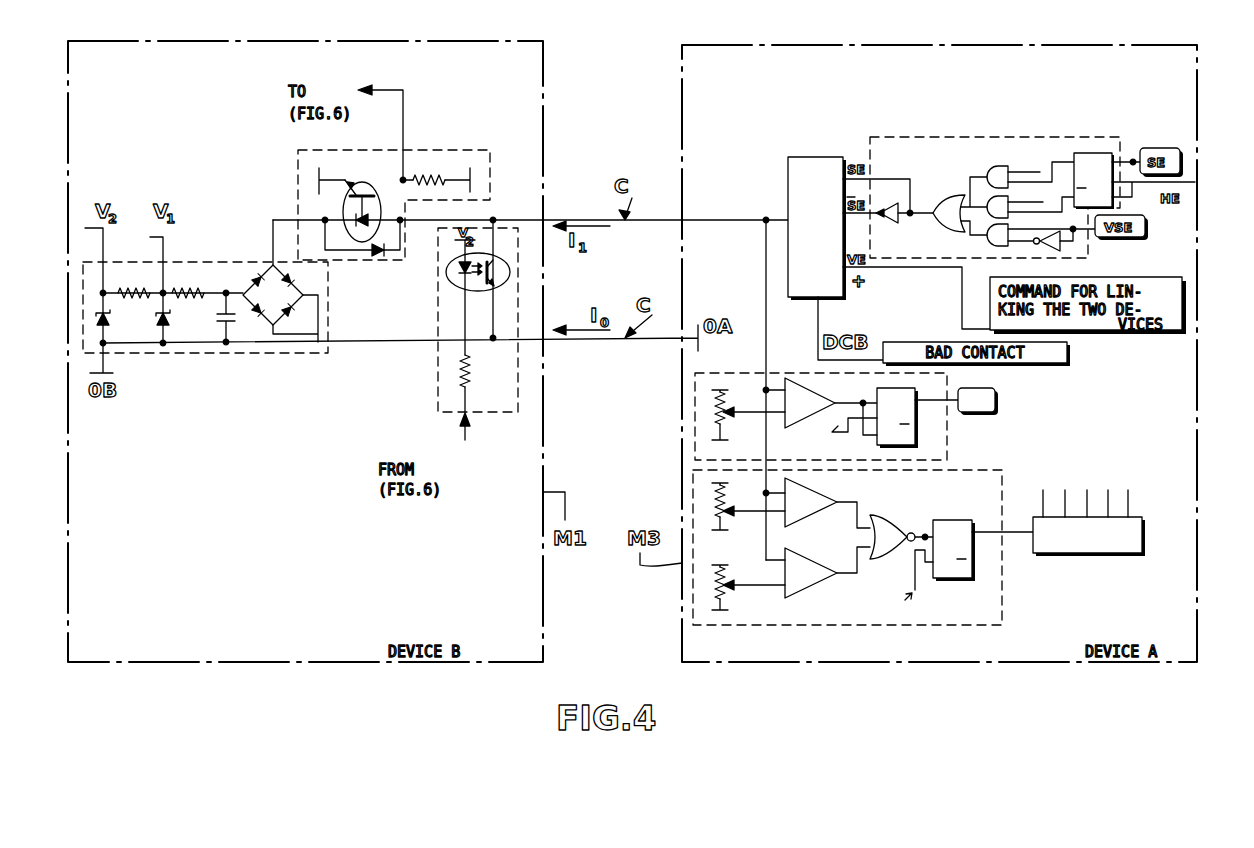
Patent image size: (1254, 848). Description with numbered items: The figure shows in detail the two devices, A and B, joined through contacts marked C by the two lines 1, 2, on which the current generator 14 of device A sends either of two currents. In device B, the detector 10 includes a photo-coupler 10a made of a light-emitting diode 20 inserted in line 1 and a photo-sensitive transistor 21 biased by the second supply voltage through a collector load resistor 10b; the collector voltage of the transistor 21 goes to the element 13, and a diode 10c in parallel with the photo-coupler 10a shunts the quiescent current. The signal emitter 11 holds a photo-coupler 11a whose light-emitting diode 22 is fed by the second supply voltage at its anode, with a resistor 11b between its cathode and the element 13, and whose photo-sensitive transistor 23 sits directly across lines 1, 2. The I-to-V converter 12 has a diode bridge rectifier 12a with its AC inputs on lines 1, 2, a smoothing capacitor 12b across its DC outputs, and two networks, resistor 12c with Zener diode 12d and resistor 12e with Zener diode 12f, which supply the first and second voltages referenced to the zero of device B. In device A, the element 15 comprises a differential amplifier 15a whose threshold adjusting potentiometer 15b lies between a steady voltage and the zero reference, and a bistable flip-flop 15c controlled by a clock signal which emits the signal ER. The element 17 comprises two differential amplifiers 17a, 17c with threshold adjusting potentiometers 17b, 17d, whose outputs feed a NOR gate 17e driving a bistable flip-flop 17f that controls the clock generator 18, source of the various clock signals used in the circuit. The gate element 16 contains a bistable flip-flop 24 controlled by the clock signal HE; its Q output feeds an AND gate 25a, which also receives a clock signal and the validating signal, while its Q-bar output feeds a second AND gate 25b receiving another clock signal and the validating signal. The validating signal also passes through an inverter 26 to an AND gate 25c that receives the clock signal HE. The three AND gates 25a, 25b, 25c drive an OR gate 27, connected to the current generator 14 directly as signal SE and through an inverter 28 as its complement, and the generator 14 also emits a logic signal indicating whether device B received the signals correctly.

The line 1 is at (556, 220).
The line 2 is at (560, 340).
The detector 10 is at (472, 152).
The photo-coupler 10a is at (357, 232).
The collector load resistor 10b is at (437, 180).
The diode 10c is at (379, 257).
The signal emitter 11 is at (438, 405).
The photo-coupler 11a is at (497, 284).
The resistor 11b is at (462, 375).
The I-to-V converter 12 is at (283, 353).
The diode bridge rectifier 12a is at (262, 283).
The smoothing capacitor 12b is at (232, 322).
The resistor 12c is at (190, 293).
The Zener diode 12d is at (170, 320).
The resistor 12e is at (136, 293).
The Zener diode 12f is at (110, 320).
The element 13 is at (413, 273).
The current generator 14 is at (815, 157).
The element 15 is at (945, 456).
The differential amplifier 15a is at (802, 388).
The threshold adjusting potentiometer 15b is at (708, 420).
The bistable flip-flop 15c is at (918, 416).
The gate element 16 is at (905, 137).
The element 17 is at (993, 598).
The differential amplifier 17a is at (810, 504).
The threshold adjusting potentiometer 17b is at (717, 503).
The differential amplifier 17c is at (806, 580).
The threshold adjusting potentiometer 17d is at (717, 600).
The NOR gate 17e is at (882, 548).
The bistable flip-flop 17f is at (956, 520).
The clock generator 18 is at (1100, 553).
The light-emitting diode 20 is at (345, 210).
The photo-sensitive transistor 21 is at (360, 192).
The light-emitting diode 22 is at (454, 279).
The photo-sensitive transistor 23 is at (511, 270).
The bistable flip-flop 24 is at (1095, 153).
The AND gate 25a is at (1003, 168).
The AND gate 25b is at (999, 200).
The AND gate 25c is at (998, 243).
The inverter 26 is at (1064, 247).
The OR gate 27 is at (932, 222).
The inverter 28 is at (890, 222).